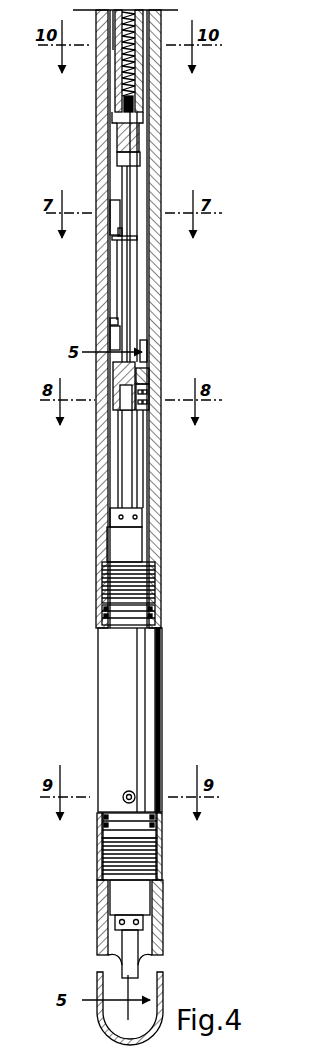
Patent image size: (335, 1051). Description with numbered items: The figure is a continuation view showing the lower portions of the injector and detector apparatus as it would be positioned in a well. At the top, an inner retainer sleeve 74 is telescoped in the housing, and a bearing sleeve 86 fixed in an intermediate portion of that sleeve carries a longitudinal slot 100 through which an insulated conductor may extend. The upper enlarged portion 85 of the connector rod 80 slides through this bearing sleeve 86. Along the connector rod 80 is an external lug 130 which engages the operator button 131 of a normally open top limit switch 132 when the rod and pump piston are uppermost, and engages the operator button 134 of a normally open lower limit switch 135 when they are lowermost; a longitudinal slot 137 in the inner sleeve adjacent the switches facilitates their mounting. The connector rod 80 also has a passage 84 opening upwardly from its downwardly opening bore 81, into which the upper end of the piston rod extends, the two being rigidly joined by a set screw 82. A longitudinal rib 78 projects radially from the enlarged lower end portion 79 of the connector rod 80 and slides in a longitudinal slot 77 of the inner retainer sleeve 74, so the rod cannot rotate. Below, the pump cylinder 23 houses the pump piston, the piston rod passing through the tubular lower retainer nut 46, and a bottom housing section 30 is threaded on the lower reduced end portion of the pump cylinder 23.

The inner retainer sleeve 74 is at (158, 170).
The bearing sleeve 86 is at (112, 88).
The longitudinal slot 100 is at (143, 90).
The upper enlarged portion 85 is at (117, 135).
The connector rod 80 is at (138, 280).
The top limit switch 132 is at (110, 205).
The operator button 131 is at (112, 237).
The external lug 130 is at (118, 240).
The longitudinal slot 137 is at (110, 285).
The operator button 134 is at (112, 320).
The lower limit switch 135 is at (112, 335).
The passage 84 is at (150, 356).
The enlarged lower end portion 79 is at (116, 378).
The downwardly opening bore 81 is at (120, 400).
The longitudinal rib 78 is at (150, 378).
The set screw 82 is at (148, 395).
The longitudinal slot 77 is at (148, 462).
The pump cylinder 23 is at (163, 740).
The lower retainer nut 46 is at (145, 928).
The bottom housing section 30 is at (163, 993).